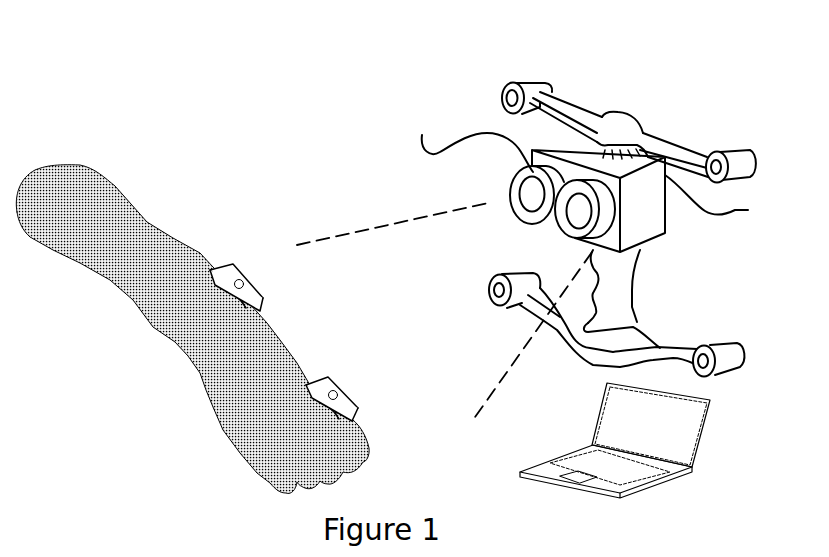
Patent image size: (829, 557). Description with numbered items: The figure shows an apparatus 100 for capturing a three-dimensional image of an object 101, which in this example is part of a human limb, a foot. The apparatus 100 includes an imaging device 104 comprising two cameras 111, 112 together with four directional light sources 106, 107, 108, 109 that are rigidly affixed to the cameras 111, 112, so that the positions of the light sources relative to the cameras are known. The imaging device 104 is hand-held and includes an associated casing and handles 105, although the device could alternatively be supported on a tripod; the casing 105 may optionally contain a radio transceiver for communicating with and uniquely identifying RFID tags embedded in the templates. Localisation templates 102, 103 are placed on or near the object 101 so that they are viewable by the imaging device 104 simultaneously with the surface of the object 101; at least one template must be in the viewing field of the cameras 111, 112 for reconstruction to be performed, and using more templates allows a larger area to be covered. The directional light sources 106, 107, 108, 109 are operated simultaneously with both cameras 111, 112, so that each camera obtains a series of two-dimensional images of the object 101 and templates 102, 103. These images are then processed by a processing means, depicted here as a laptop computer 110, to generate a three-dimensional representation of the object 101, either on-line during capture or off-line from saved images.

The apparatus 100 is at (303, 127).
The object 101 is at (236, 373).
The localisation template 102 is at (238, 283).
The localisation template 103 is at (350, 401).
The imaging device 104 is at (533, 194).
The casing and handles 105 is at (640, 213).
The directional light source 106 is at (530, 87).
The directional light source 107 is at (735, 152).
The directional light source 108 is at (520, 280).
The directional light source 109 is at (722, 352).
The laptop computer 110 is at (588, 465).
The camera 111 is at (467, 140).
The camera 112 is at (727, 199).